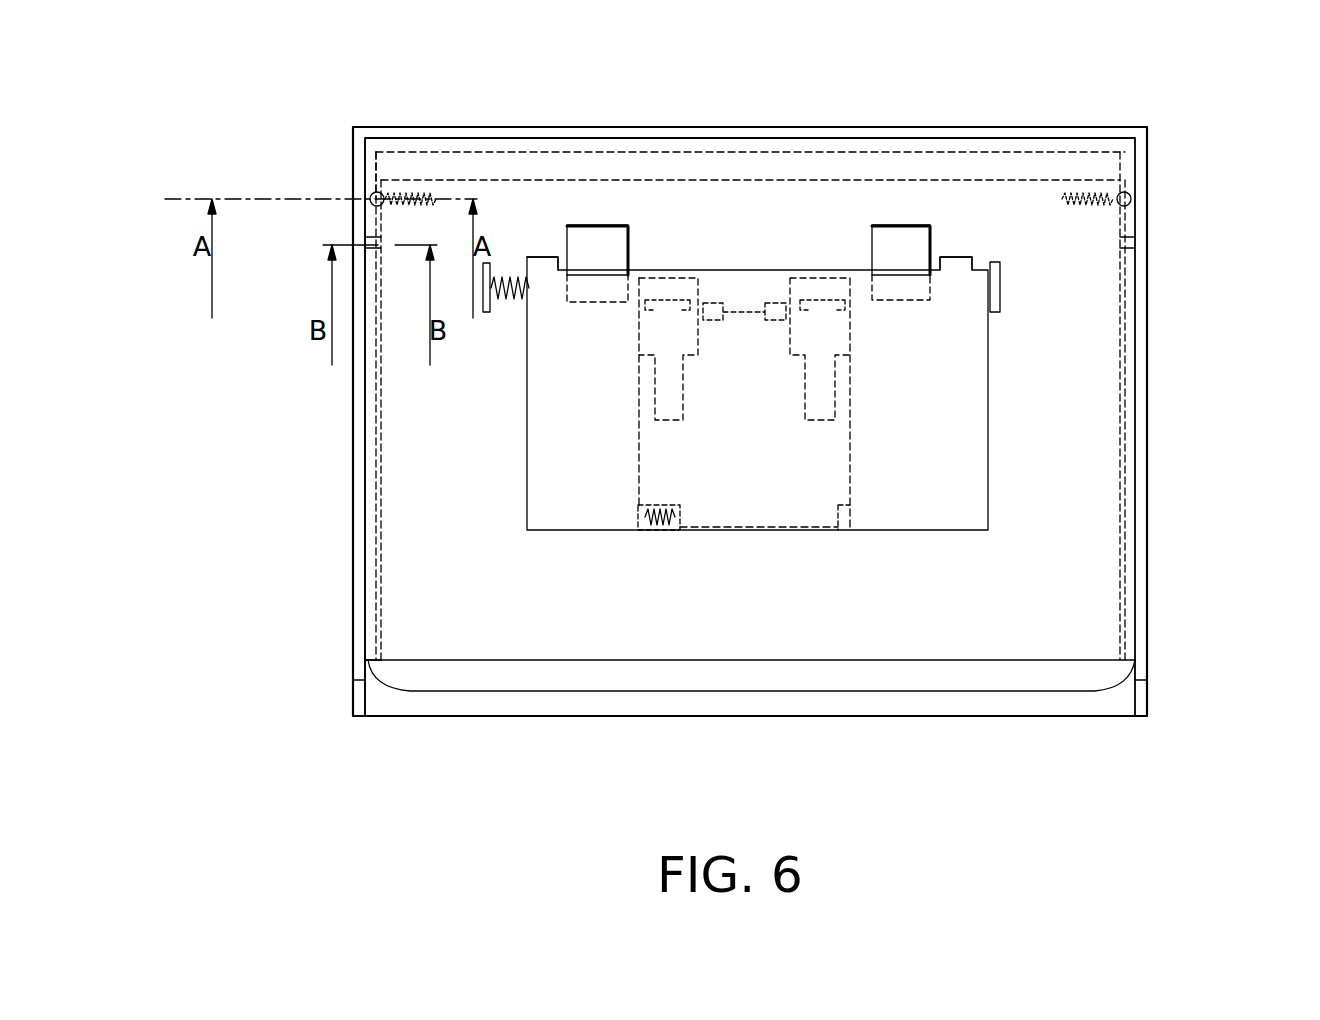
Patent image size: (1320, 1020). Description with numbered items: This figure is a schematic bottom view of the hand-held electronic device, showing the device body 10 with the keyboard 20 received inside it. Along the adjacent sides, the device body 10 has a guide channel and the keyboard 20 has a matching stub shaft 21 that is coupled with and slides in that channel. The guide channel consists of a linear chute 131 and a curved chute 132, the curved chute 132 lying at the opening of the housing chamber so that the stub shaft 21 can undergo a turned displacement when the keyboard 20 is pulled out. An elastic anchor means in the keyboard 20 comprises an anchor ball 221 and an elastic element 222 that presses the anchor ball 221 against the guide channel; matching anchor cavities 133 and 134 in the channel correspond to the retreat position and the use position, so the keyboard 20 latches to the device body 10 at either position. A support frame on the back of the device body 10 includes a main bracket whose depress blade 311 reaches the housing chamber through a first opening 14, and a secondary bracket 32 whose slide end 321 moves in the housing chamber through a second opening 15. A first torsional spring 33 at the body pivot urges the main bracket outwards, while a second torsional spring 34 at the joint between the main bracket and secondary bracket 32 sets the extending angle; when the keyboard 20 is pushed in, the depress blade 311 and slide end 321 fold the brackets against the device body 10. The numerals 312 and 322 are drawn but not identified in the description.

The device body 10 is at (1168, 614).
The keyboard 20 is at (957, 682).
The linear chute 131 is at (366, 412).
The curved chute 132 is at (370, 651).
The anchor cavity 133 is at (370, 196).
The anchor cavity 134 is at (374, 612).
The first opening 14 is at (580, 290).
The second opening 15 is at (682, 335).
The stub shaft 21 is at (375, 245).
The anchor ball 221 is at (370, 186).
The elastic element 222 is at (404, 190).
The depress blade 311 is at (608, 238).
The step 312 is at (545, 262).
The secondary bracket 32 is at (783, 512).
The slide end 321 is at (672, 290).
The connecting member 322 is at (720, 305).
The first torsional spring 33 is at (507, 276).
The second torsional spring 34 is at (657, 532).